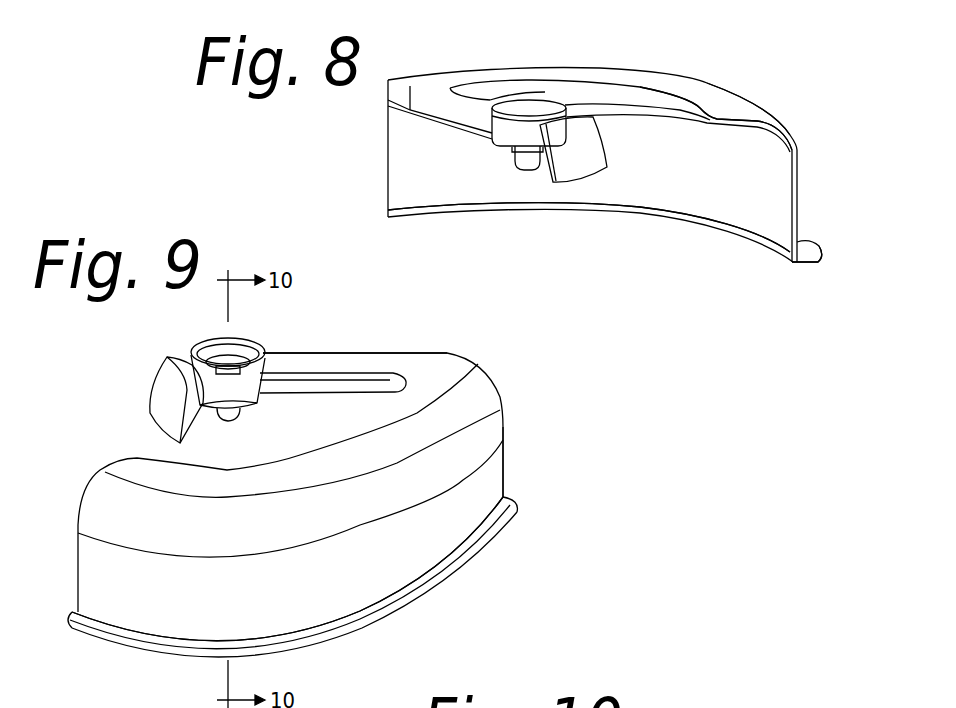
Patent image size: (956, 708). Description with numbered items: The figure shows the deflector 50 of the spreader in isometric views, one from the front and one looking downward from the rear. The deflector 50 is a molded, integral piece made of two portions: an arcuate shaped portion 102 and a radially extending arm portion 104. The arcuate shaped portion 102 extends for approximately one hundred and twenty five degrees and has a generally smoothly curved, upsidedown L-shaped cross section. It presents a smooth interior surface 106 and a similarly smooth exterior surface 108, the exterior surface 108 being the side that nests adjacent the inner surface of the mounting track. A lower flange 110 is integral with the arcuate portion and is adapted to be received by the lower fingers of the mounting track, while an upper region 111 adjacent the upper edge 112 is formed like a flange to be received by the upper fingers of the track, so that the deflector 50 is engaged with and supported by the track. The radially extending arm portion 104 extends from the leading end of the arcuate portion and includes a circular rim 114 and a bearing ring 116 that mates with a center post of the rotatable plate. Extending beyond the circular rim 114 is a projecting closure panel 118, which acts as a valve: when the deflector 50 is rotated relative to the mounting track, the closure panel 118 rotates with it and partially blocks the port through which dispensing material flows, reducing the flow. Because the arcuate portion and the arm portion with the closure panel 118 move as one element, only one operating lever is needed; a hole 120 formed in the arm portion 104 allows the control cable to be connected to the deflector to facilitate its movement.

In FIG. 8, the deflector 50 is at (649, 54).
In FIG. 9, the deflector 50 is at (496, 587).
In FIG. 8, the arcuate shaped portion 102 is at (550, 77).
In FIG. 9, the arcuate shaped portion 102 is at (407, 580).
In FIG. 8, the radially extending arm portion 104 is at (480, 101).
In FIG. 9, the radially extending arm portion 104 is at (342, 386).
In FIG. 8, the interior surface 106 is at (733, 207).
In FIG. 9, the exterior surface 108 is at (487, 480).
In FIG. 8, the lower flange 110 is at (807, 250).
In FIG. 9, the lower flange 110 is at (360, 623).
In FIG. 8, the upper region 111 is at (710, 100).
In FIG. 8, the upper edge 112 is at (703, 113).
In FIG. 9, the upper edge 112 is at (290, 483).
In FIG. 8, the circular rim 114 is at (513, 133).
In FIG. 9, the circular rim 114 is at (247, 397).
In FIG. 8, the bearing ring 116 is at (527, 167).
In FIG. 9, the bearing ring 116 is at (222, 410).
In FIG. 8, the projecting closure panel 118 is at (590, 142).
In FIG. 9, the projecting closure panel 118 is at (167, 410).
In FIG. 9, the hole 120 is at (323, 363).